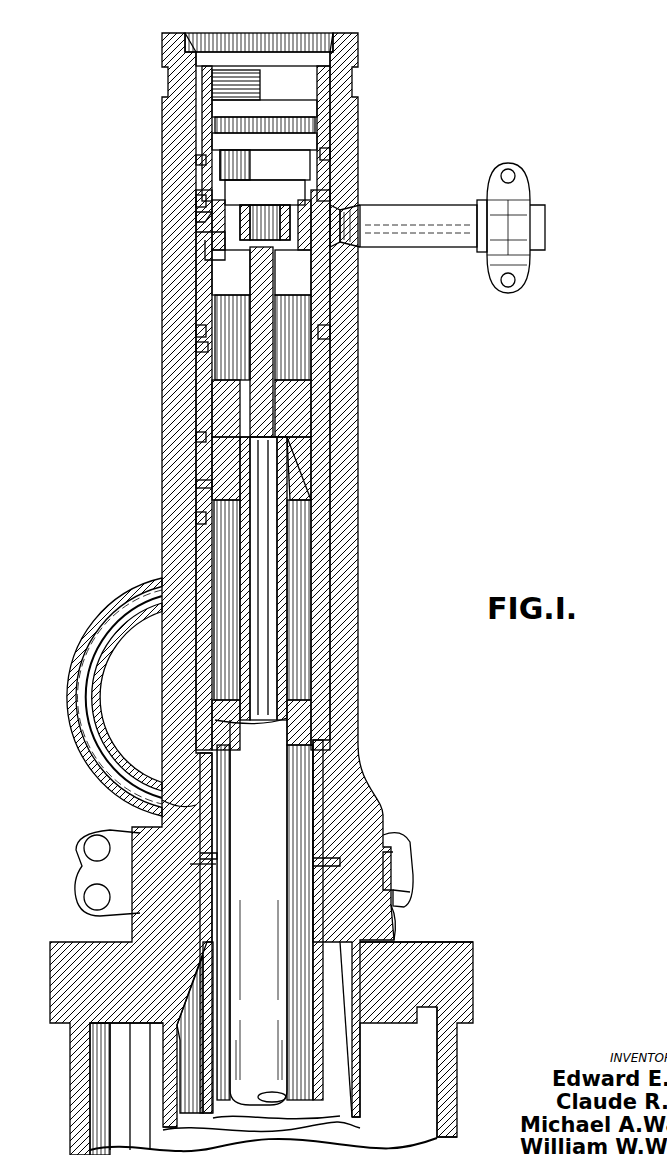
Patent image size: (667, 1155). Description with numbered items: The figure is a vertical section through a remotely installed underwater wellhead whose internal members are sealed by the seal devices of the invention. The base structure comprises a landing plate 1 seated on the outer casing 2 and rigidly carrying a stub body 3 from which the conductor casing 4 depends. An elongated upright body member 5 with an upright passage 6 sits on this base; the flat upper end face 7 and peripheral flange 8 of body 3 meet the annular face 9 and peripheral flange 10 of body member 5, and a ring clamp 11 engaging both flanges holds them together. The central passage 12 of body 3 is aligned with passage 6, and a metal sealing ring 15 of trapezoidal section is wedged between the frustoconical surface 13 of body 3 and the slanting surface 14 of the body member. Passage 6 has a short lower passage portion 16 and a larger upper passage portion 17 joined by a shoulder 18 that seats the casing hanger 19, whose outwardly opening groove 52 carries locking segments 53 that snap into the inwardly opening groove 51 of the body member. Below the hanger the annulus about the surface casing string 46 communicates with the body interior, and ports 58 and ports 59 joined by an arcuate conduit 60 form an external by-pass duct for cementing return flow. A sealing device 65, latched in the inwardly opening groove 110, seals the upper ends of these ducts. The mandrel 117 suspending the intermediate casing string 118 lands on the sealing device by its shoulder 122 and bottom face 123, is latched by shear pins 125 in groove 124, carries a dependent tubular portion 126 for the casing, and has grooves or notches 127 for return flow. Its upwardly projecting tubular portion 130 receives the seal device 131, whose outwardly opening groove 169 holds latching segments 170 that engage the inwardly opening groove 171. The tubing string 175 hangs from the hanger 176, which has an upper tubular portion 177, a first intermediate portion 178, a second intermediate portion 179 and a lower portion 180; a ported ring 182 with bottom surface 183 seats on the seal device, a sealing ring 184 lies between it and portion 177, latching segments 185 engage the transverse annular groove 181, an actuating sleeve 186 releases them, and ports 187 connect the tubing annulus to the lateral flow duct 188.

The landing plate 1 is at (448, 936).
The outer casing 2 is at (460, 1050).
The stub body 3 is at (395, 936).
The conductor casing 4 is at (362, 1073).
The body member 5 is at (360, 50).
The upright passage 6 is at (320, 48).
The upper end face 7 is at (388, 870).
The peripheral flange 8 is at (135, 835).
The annular face 9 is at (138, 882).
The peripheral flange 10 is at (412, 894).
The ring clamp 11 is at (86, 863).
The central passage 12 is at (151, 1048).
The frustoconical surface 13 is at (200, 866).
The slanting surface 14 is at (202, 858).
The metal sealing ring 15 is at (340, 862).
The lower passage portion 16 is at (320, 840).
The upper passage portion 17 is at (200, 352).
The shoulder 18 is at (210, 795).
The casing hanger 19 is at (218, 760).
The surface casing string 46 is at (318, 1080).
The inwardly opening groove 51 is at (340, 745).
The outwardly opening groove 52 is at (258, 720).
The locking segments 53 is at (322, 737).
The ports 58 is at (198, 805).
The ports 59 is at (168, 566).
The arcuate conduit 60 is at (78, 766).
The sealing device 65 is at (318, 556).
The inwardly opening groove 110 is at (200, 520).
The mandrel 117 is at (205, 450).
The intermediate casing string 118 is at (251, 911).
The shoulder 122 is at (202, 460).
The bottom face 123 is at (200, 482).
The groove 124 is at (343, 446).
The shear pins 125 is at (200, 438).
The dependent tubular portion 126 is at (238, 585).
The grooves or notches 127 is at (332, 464).
The upwardly projecting tubular portion 130 is at (293, 315).
The seal device 131 is at (295, 266).
The outwardly opening groove 169 is at (196, 344).
The latching segments 170 is at (196, 330).
The inwardly opening groove 171 is at (320, 334).
The tubing string 175 is at (242, 730).
The hanger 176 is at (262, 190).
The upper tubular portion 177 is at (200, 178).
The first intermediate portion 178 is at (218, 192).
The second intermediate portion 179 is at (265, 222).
The lower portion 180 is at (231, 290).
The transverse annular groove 181 is at (196, 160).
The ported ring 182 is at (196, 214).
The bottom surface 183 is at (338, 244).
The sealing ring 184 is at (196, 200).
The latching segments 185 is at (330, 152).
The actuating sleeve 186 is at (330, 112).
The ports 187 is at (225, 232).
The lateral flow duct 188 is at (398, 210).